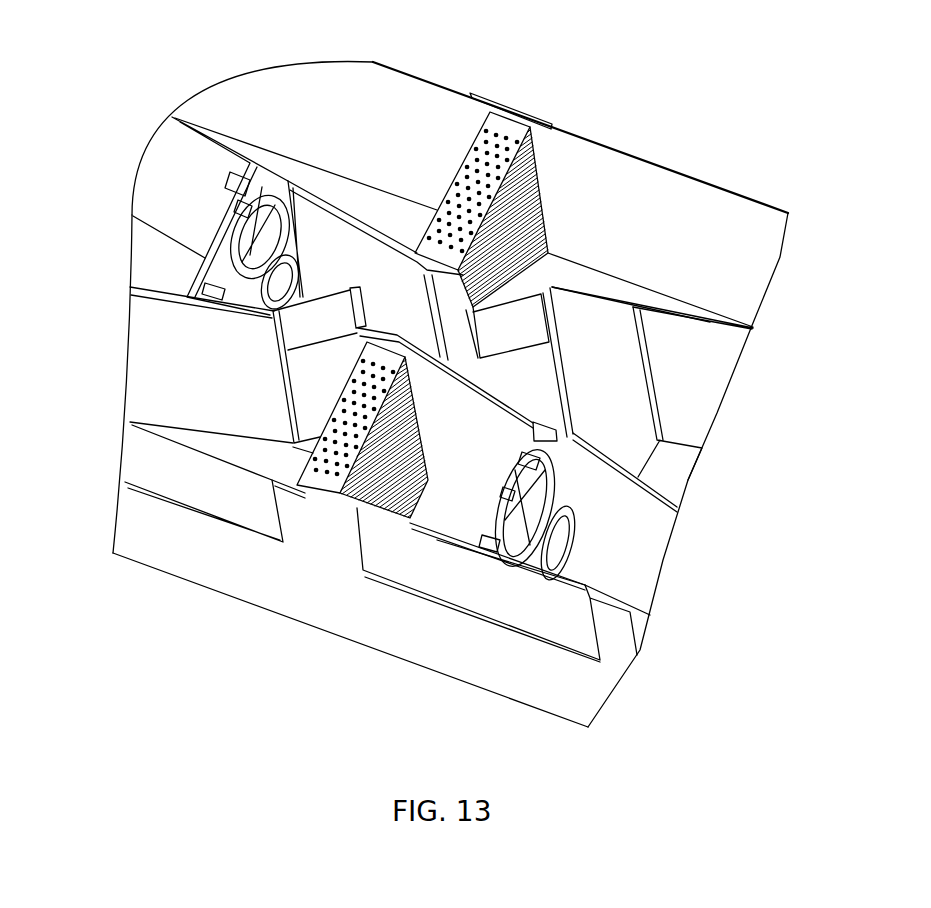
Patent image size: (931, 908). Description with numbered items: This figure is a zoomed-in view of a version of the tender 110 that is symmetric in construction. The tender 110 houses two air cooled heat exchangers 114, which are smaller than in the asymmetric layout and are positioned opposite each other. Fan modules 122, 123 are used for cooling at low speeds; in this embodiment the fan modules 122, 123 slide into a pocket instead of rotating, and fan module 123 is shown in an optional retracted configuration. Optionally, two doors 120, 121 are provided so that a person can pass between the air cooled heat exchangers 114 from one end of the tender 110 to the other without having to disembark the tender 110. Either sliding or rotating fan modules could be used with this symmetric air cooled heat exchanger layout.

The tender 110 is at (293, 643).
The air cooled heat exchanger 114 is at (517, 118).
The door 120 is at (518, 323).
The door 121 is at (313, 371).
The fan module 122 is at (272, 177).
The fan module 123 is at (560, 497).